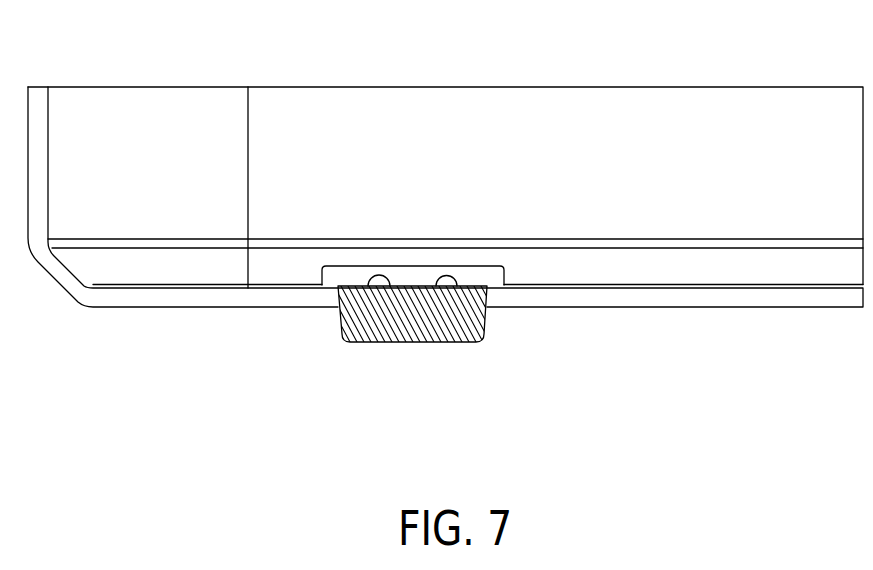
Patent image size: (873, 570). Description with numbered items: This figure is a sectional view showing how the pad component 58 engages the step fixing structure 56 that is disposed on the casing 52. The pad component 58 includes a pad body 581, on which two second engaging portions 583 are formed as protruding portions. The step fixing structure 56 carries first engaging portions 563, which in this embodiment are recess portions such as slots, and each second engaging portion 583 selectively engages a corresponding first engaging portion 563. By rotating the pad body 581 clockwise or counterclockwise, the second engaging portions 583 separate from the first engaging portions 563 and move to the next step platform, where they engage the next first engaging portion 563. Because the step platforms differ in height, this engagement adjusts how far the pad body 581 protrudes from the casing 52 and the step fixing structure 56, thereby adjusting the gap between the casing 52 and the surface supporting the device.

The casing 52 is at (36, 100).
The step fixing structure 56 is at (410, 276).
The pad component 58 is at (406, 346).
The first engaging portion 563 is at (378, 277).
The second engaging portion 583 is at (446, 280).
The pad body 581 is at (481, 341).